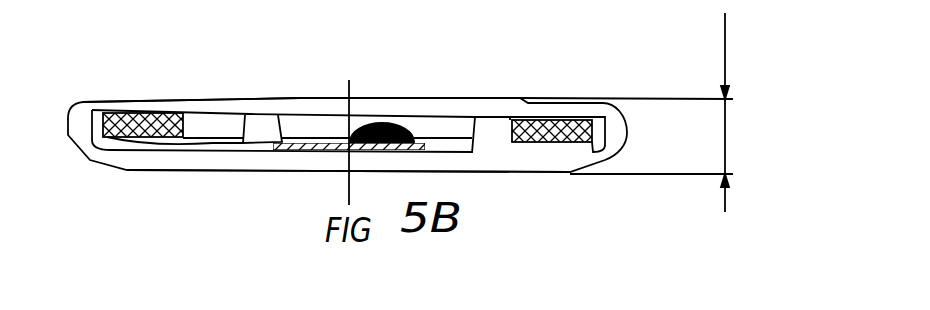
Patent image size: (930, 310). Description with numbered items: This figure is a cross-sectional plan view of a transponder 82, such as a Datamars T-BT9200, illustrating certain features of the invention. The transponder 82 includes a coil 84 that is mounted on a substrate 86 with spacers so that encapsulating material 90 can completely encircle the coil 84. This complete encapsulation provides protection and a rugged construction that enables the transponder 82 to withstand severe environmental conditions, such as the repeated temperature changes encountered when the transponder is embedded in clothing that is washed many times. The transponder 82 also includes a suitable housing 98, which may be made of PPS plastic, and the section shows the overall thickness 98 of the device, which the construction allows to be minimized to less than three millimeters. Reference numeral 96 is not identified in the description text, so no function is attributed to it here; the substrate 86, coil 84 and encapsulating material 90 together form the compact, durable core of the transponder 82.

The transponder 82 is at (165, 175).
The coil 84 is at (553, 120).
The substrate 86 is at (522, 163).
The encapsulating material 90 is at (285, 98).
The top surface 96 is at (390, 97).
The housing 98 is at (732, 135).